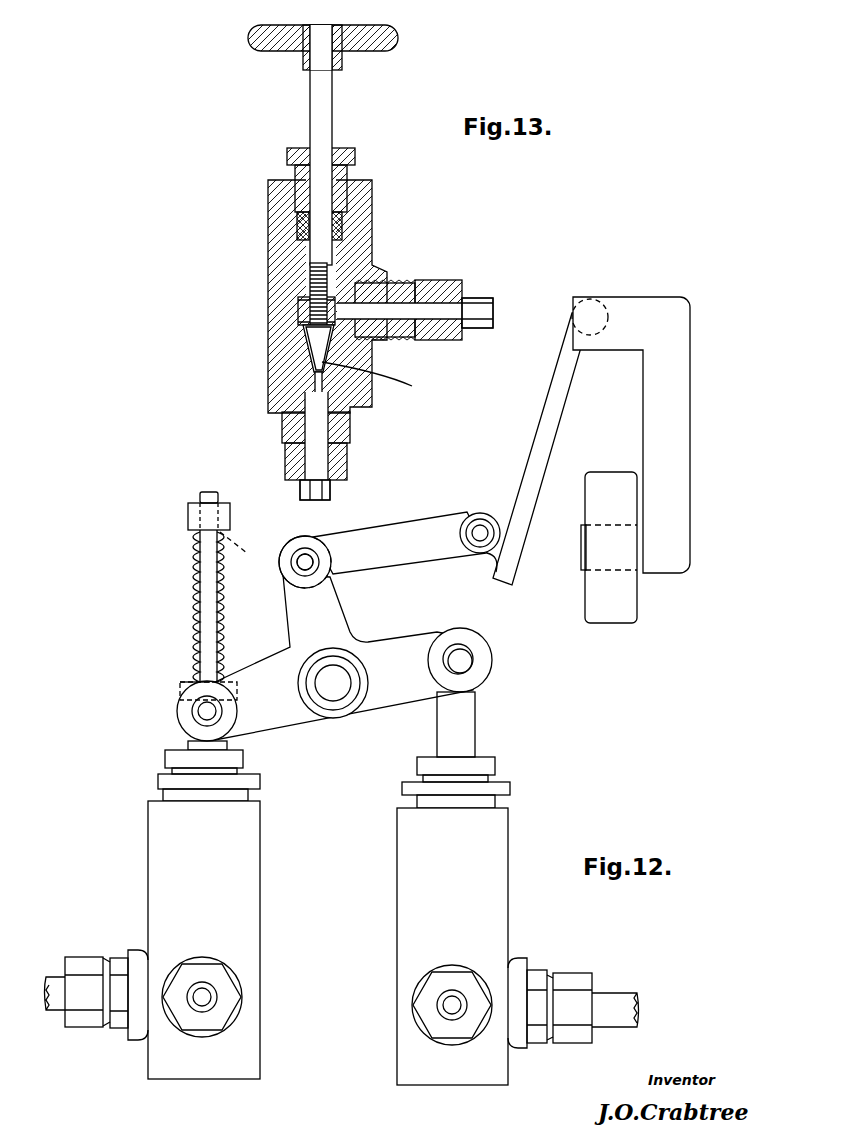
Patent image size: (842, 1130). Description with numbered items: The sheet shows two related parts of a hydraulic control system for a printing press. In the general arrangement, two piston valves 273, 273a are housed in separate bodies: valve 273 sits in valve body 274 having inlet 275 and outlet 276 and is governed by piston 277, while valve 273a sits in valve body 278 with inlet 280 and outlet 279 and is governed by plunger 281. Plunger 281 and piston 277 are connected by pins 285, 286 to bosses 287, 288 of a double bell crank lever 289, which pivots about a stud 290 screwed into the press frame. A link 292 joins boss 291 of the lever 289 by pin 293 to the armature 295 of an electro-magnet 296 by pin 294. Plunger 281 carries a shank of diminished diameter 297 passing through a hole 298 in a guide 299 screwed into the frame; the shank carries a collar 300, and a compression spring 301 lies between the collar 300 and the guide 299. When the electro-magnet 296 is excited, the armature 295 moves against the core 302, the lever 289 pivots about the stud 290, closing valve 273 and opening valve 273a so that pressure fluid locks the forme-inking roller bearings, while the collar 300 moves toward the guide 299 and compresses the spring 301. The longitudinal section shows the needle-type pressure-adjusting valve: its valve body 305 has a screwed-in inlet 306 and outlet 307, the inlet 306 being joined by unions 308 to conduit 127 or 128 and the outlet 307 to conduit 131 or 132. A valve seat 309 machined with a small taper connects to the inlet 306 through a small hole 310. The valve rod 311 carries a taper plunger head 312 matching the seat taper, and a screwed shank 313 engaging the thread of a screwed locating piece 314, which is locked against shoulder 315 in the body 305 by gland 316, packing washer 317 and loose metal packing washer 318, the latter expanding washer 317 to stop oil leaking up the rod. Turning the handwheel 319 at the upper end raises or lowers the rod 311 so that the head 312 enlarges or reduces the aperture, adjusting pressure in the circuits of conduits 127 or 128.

In FIG. 13, the handwheel 319 is at (252, 38).
In FIG. 13, the valve rod 311 is at (320, 88).
In FIG. 13, the gland 316 is at (296, 150).
In FIG. 13, the packing washer 317 is at (300, 205).
In FIG. 13, the loose metal packing washer 318 is at (303, 226).
In FIG. 13, the valve body 305 is at (282, 233).
In FIG. 13, the screwed locating piece 314 is at (300, 290).
In FIG. 13, the shoulder 315 is at (302, 303).
In FIG. 13, the screwed shank 313 is at (309, 300).
In FIG. 13, the valve seat 309 is at (312, 347).
In FIG. 13, the small hole 310 is at (312, 378).
In FIG. 13, the taper plunger head 312 is at (389, 381).
In FIG. 13, the inlet 306 is at (290, 416).
In FIG. 13, the union 308 is at (290, 456).
In FIG. 13, the conduit 127 is at (304, 490).
In FIG. 13, the conduit 128 is at (315, 490).
In FIG. 13, the outlet 307 is at (392, 283).
In FIG. 13, the conduit 131 is at (482, 308).
In FIG. 13, the conduit 132 is at (477, 313).
In FIG. 12, the armature 295 is at (524, 450).
In FIG. 12, the electro-magnet 296 is at (665, 540).
In FIG. 12, the core 302 is at (582, 548).
In FIG. 12, the link 292 is at (388, 537).
In FIG. 12, the pin 294 is at (470, 520).
In FIG. 12, the boss 291 is at (291, 549).
In FIG. 12, the hole 298 is at (248, 551).
In FIG. 12, the pin 293 is at (302, 569).
In FIG. 12, the double bell crank lever 289 is at (374, 640).
In FIG. 12, the stud 290 is at (334, 690).
In FIG. 12, the boss 288 is at (478, 655).
In FIG. 12, the pin 286 is at (464, 664).
In FIG. 12, the boss 287 is at (203, 698).
In FIG. 12, the pin 285 is at (206, 695).
In FIG. 12, the collar 300 is at (198, 676).
In FIG. 12, the compression spring 301 is at (195, 580).
In FIG. 12, the guide 299 is at (192, 521).
In FIG. 12, the shank of diminished diameter 297 is at (205, 496).
In FIG. 12, the plunger 281 is at (188, 744).
In FIG. 12, the valve 273a is at (205, 845).
In FIG. 12, the valve body 278 is at (156, 891).
In FIG. 12, the inlet 280 is at (56, 992).
In FIG. 12, the outlet 279 is at (199, 1000).
In FIG. 12, the piston 277 is at (470, 723).
In FIG. 12, the valve 273 is at (510, 833).
In FIG. 12, the valve body 274 is at (497, 900).
In FIG. 12, the inlet 275 is at (612, 1018).
In FIG. 12, the outlet 276 is at (455, 1008).